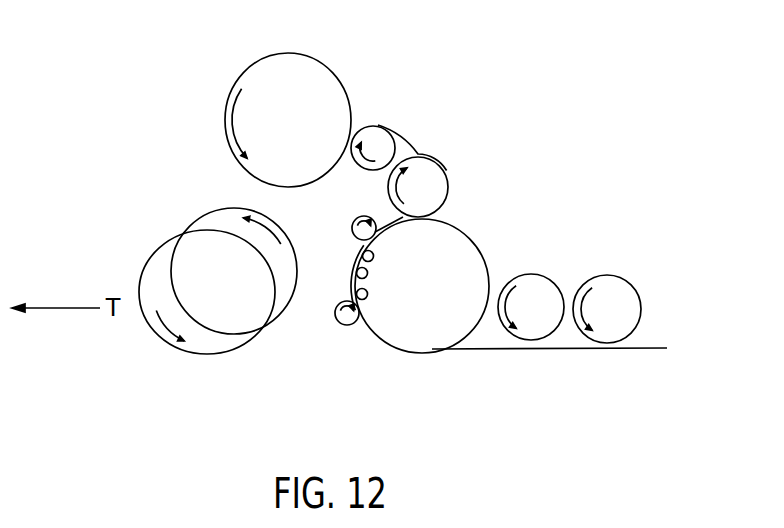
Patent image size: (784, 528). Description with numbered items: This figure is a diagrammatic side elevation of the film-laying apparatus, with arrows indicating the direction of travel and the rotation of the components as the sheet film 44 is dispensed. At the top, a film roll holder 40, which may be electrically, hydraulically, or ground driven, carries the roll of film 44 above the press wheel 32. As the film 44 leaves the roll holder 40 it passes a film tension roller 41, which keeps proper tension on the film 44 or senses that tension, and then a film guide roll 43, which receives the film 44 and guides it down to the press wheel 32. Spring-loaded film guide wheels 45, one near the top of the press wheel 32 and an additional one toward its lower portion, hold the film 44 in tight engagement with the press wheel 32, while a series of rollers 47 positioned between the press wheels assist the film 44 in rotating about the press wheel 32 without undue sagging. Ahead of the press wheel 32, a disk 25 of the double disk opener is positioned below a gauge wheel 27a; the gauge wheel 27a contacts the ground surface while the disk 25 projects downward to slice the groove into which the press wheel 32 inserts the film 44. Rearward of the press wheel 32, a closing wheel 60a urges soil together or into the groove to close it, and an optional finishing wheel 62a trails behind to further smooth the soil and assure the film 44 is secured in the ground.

The film roll holder 40 is at (258, 77).
The film tension roller 41 is at (376, 137).
The film guide roll 43 is at (437, 189).
The film 44 is at (406, 147).
The press wheel 32 is at (458, 243).
The film guide wheel 45 is at (354, 220).
The roller 47 is at (373, 259).
The gauge wheel 27a is at (220, 220).
The disk 25 is at (152, 280).
The closing wheel 60a is at (527, 287).
The finishing wheel 62a is at (617, 293).